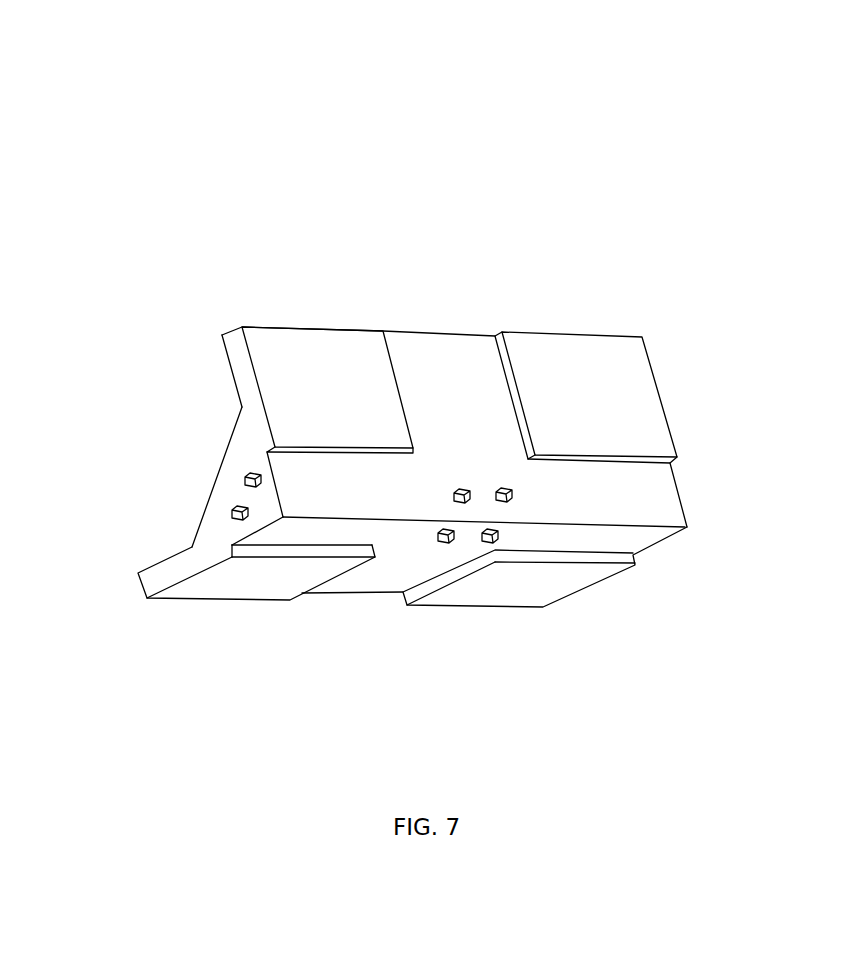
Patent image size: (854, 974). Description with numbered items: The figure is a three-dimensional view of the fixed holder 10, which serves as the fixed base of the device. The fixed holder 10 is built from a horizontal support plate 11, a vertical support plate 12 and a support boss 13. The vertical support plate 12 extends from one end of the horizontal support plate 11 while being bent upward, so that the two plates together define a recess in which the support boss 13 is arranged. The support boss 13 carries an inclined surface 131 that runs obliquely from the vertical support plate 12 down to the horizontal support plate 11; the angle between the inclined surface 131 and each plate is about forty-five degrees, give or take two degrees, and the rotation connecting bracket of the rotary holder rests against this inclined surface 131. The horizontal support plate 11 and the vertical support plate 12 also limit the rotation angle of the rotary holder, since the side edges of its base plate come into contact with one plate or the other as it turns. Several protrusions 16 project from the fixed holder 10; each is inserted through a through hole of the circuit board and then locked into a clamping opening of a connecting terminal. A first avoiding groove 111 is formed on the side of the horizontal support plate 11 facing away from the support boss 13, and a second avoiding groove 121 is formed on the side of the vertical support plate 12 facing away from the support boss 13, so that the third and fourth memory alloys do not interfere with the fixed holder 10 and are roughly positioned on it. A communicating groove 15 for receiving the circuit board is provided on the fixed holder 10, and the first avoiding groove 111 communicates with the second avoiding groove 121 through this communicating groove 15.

The fixed holder 10 is at (459, 42).
The horizontal support plate 11 is at (172, 562).
The first avoiding groove 111 is at (392, 570).
The vertical support plate 12 is at (238, 374).
The second avoiding groove 121 is at (430, 355).
The support boss 13 is at (235, 478).
The inclined surface 131 is at (232, 428).
The communicating groove 15 is at (640, 502).
The protrusions 16 is at (512, 497).